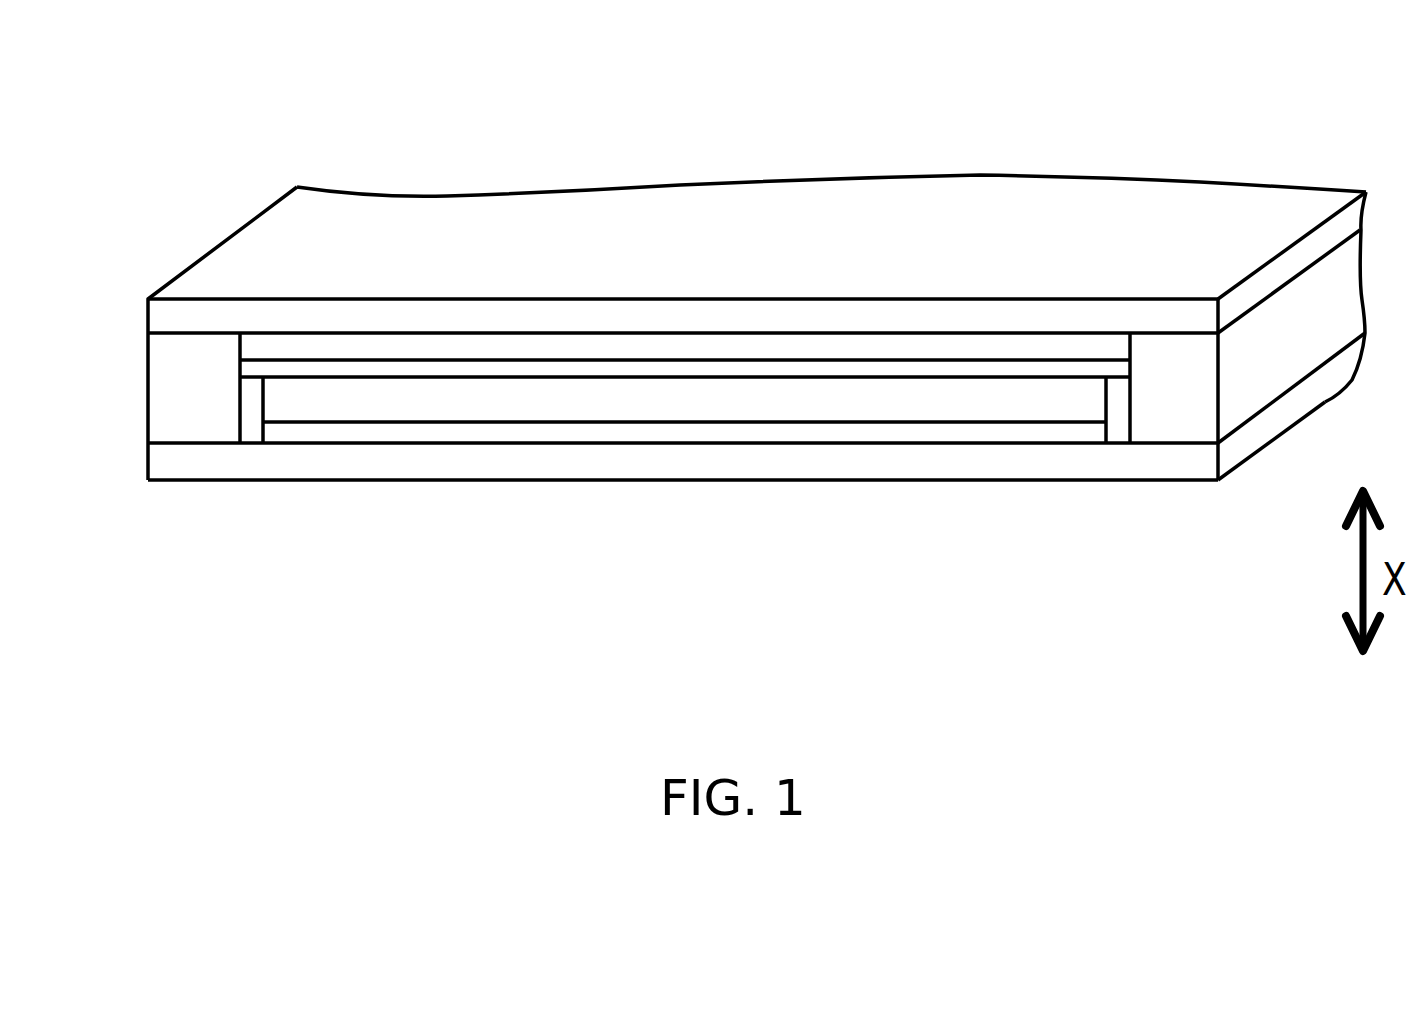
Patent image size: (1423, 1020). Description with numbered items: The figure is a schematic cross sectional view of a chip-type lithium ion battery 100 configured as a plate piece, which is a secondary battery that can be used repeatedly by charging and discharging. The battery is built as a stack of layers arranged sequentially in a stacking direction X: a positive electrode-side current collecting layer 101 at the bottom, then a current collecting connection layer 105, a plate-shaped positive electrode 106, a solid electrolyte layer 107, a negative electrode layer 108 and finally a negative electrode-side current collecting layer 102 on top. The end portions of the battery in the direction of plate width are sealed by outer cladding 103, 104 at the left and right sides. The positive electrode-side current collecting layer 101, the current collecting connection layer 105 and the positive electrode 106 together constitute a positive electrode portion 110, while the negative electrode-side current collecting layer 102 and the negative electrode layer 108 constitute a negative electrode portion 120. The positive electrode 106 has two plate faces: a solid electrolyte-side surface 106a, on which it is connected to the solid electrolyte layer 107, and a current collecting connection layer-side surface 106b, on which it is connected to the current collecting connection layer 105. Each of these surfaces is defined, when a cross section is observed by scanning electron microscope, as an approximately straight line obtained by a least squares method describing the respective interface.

The lithium ion battery 100 is at (217, 247).
The positive electrode-side current collecting layer 101 is at (203, 467).
The negative electrode-side current collecting layer 102 is at (282, 318).
The outer cladding 103 is at (175, 397).
The outer cladding 104 is at (1195, 408).
The current collecting connection layer 105 is at (413, 433).
The positive electrode 106 is at (323, 407).
The solid electrolyte-side surface 106a is at (522, 377).
The current collecting connection layer-side surface 106b is at (552, 423).
The solid electrolyte layer 107 is at (702, 367).
The negative electrode layer 108 is at (470, 348).
The positive electrode portion 110 is at (508, 552).
The negative electrode portion 120 is at (480, 127).